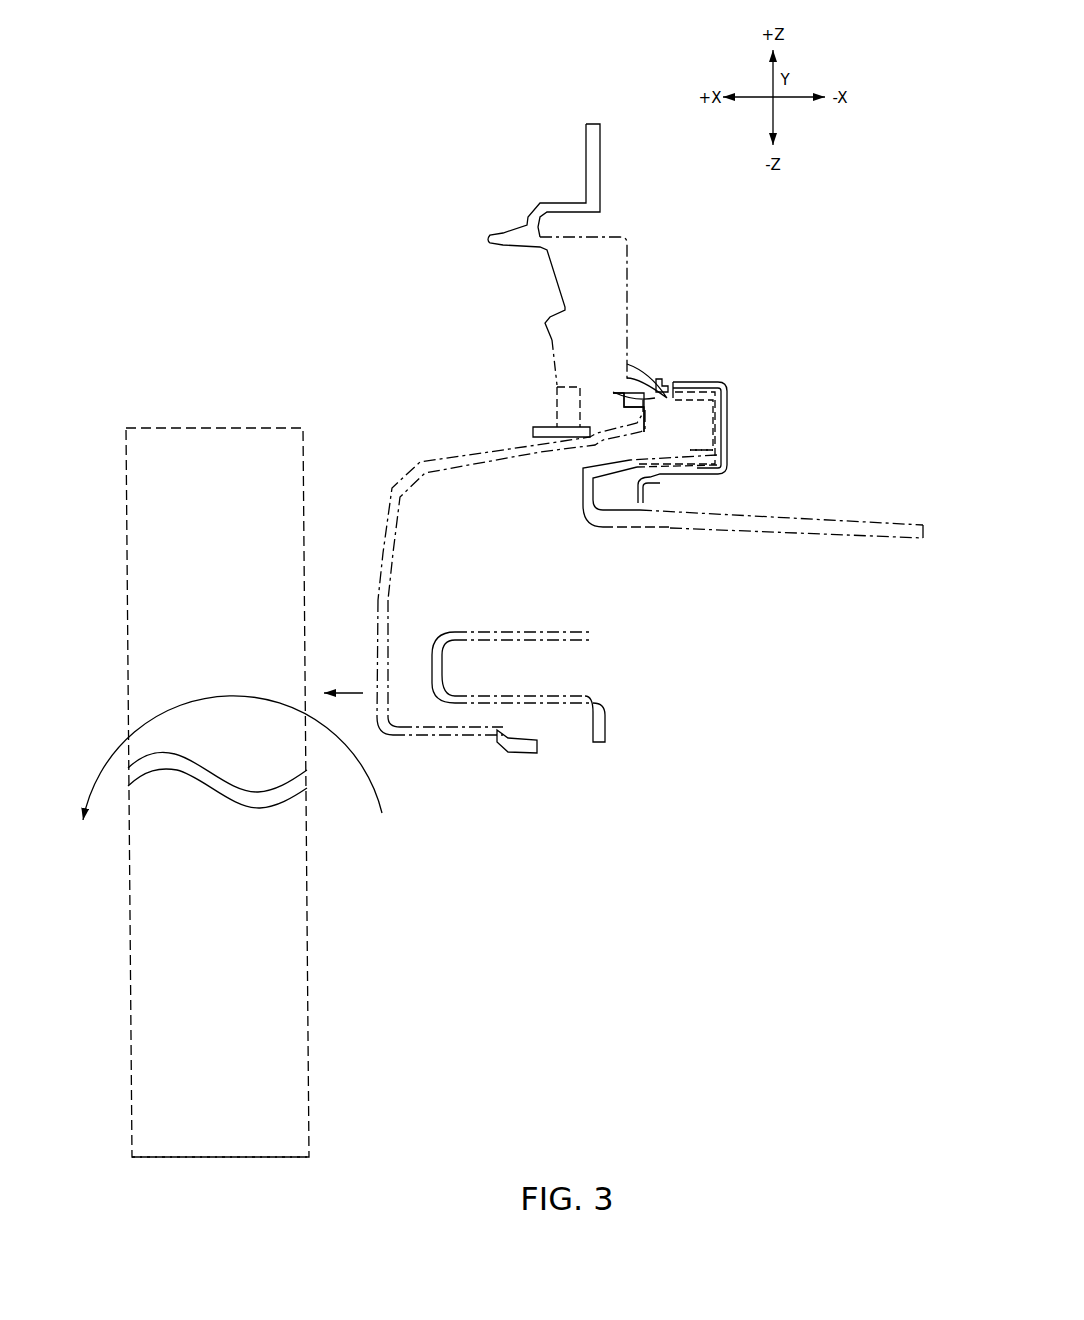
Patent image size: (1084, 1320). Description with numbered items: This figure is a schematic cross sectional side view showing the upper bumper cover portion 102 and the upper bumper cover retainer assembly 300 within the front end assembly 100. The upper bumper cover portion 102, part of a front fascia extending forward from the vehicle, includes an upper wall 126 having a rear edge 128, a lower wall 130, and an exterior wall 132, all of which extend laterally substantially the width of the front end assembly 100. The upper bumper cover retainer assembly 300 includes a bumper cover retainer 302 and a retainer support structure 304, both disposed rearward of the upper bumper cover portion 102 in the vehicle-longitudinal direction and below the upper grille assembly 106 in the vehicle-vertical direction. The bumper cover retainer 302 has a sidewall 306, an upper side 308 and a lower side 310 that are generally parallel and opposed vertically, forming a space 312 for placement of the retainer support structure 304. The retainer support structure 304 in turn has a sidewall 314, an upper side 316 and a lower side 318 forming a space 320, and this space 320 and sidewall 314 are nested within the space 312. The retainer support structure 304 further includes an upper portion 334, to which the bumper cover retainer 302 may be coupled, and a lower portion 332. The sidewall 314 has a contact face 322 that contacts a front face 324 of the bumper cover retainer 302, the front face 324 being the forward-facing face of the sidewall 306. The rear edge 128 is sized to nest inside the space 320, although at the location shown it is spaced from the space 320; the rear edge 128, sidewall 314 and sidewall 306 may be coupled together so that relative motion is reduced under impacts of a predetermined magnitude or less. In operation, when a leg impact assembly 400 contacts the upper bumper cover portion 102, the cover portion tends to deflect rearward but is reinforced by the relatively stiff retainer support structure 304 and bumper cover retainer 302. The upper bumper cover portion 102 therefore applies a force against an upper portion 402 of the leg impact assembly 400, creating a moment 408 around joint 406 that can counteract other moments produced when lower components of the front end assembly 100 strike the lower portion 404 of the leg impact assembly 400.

The front end assembly 100 is at (372, 328).
The upper bumper cover portion 102 is at (381, 579).
The upper grille assembly 106 is at (598, 160).
The upper wall 126 is at (444, 462).
The rear edge 128 is at (633, 420).
The lower wall 130 is at (430, 732).
The exterior wall 132 is at (377, 652).
The upper bumper cover retainer assembly 300 is at (838, 312).
The bumper cover retainer 302 is at (733, 378).
The retainer support structure 304 is at (622, 521).
The sidewall 306 is at (728, 410).
The upper side 308 is at (693, 382).
The lower side 310 is at (697, 477).
The space 312 is at (677, 424).
The sidewall 314 is at (718, 423).
The upper side 316 is at (672, 392).
The lower side 318 is at (662, 463).
The space 320 is at (628, 412).
The contact face 322 is at (724, 443).
The front face 324 is at (716, 432).
The lower portion 332 is at (820, 512).
The upper portion 334 is at (675, 413).
The leg impact assembly 400 is at (333, 440).
The upper portion 402 is at (295, 502).
The lower portion 404 is at (302, 1100).
The joint 406 is at (232, 805).
The moment 408 is at (369, 786).